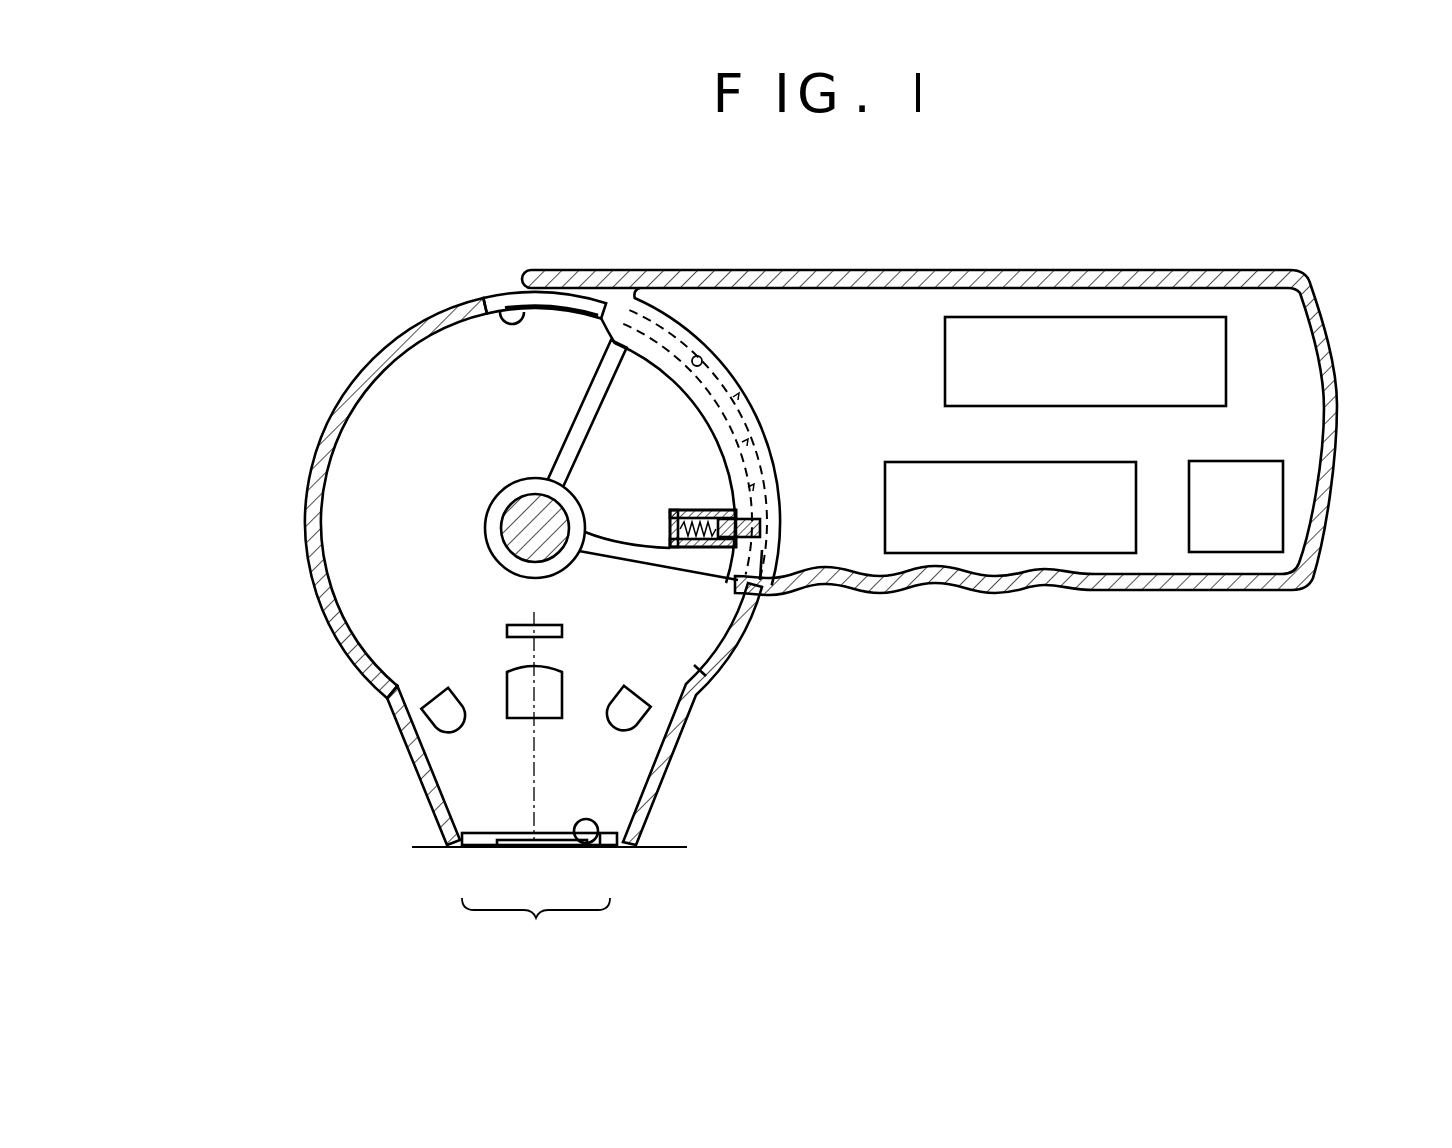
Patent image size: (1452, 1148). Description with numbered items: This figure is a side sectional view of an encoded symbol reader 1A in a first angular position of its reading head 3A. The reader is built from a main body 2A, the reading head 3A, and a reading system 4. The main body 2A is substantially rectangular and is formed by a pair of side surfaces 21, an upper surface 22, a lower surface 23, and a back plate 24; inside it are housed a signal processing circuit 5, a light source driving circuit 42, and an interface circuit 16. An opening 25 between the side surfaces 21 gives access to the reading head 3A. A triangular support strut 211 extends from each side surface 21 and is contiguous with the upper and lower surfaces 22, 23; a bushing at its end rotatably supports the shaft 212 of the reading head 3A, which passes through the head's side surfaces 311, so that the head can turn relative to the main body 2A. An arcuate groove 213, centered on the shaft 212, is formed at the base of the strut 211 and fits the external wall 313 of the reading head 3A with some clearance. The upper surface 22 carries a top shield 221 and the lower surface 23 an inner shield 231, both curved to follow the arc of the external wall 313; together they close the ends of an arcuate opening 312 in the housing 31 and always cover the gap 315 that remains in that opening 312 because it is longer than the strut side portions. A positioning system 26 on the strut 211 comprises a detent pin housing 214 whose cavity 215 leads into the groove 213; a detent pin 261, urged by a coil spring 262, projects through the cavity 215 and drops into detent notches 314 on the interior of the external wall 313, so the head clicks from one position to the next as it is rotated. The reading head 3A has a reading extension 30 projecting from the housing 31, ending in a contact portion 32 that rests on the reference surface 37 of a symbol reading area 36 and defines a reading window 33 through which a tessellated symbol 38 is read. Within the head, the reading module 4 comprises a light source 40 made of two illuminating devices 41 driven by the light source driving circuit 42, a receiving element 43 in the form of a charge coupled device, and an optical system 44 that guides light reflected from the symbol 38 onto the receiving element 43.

The encoded symbol reader 1A is at (1284, 236).
The main body 2A is at (1340, 304).
The reading head 3A is at (299, 500).
The reading system 4 is at (463, 670).
The signal processing circuit 5 is at (1228, 357).
The interface circuit 16 is at (1258, 461).
The side surface 21 is at (1105, 289).
The upper surface 22 is at (985, 271).
The lower surface 23 is at (1200, 592).
The back plate 24 is at (1332, 498).
The opening 25 is at (525, 390).
The positioning system 26 is at (773, 512).
The reading extension 30 is at (386, 712).
The housing 31 is at (347, 387).
The contact portion 32 is at (632, 849).
The reading window 33 is at (472, 847).
The symbol reading area 36 is at (536, 926).
The reference surface 37 is at (414, 847).
The tessellated symbol 38 is at (590, 846).
The light source 40 is at (597, 744).
The illuminating device 41 is at (440, 730).
The light source driving circuit 42 is at (926, 462).
The receiving element 43 is at (510, 627).
The optical system 44 is at (522, 717).
The support strut 211 is at (627, 363).
The shaft 212 is at (490, 527).
The arcuate groove 213 is at (702, 357).
The detent pin housing 214 is at (688, 562).
The cavity 215 is at (766, 523).
The top shield 221 is at (518, 288).
The inner shield 231 is at (745, 640).
The detent pin 261 is at (773, 583).
The coil spring 262 is at (690, 552).
The side surface 311 is at (350, 462).
The opening 312 is at (585, 300).
The external wall 313 is at (733, 395).
The detent notch 314 is at (752, 452).
The gap 315 is at (506, 302).